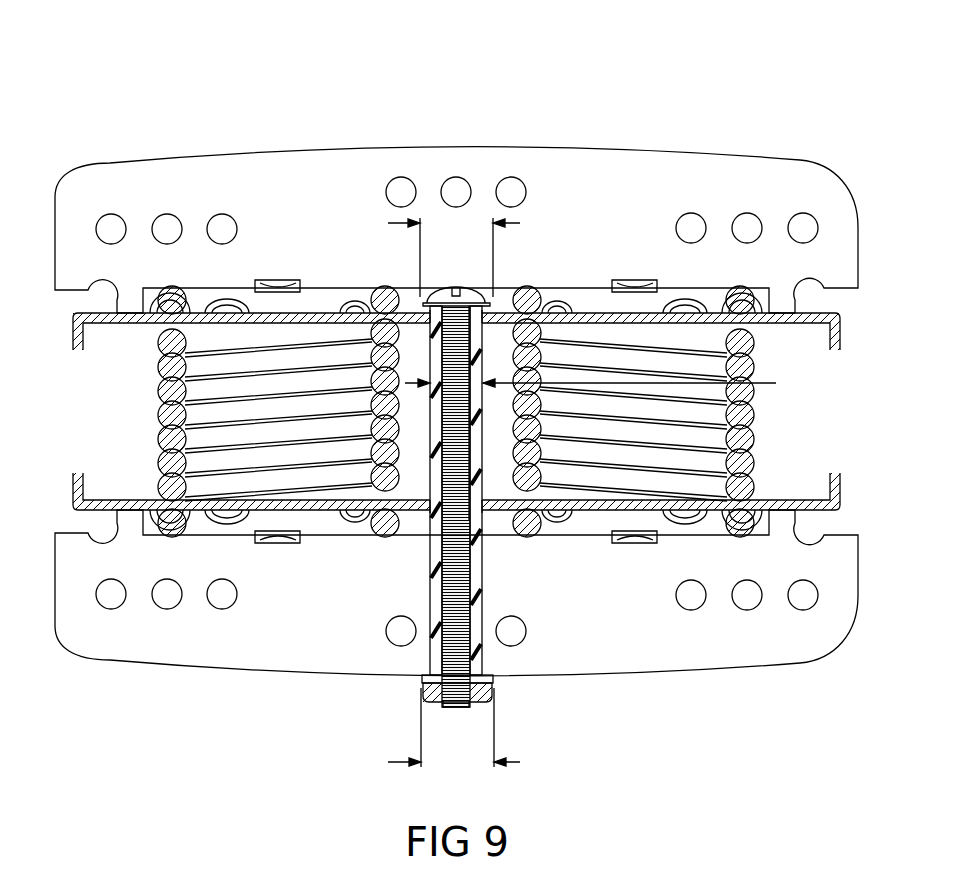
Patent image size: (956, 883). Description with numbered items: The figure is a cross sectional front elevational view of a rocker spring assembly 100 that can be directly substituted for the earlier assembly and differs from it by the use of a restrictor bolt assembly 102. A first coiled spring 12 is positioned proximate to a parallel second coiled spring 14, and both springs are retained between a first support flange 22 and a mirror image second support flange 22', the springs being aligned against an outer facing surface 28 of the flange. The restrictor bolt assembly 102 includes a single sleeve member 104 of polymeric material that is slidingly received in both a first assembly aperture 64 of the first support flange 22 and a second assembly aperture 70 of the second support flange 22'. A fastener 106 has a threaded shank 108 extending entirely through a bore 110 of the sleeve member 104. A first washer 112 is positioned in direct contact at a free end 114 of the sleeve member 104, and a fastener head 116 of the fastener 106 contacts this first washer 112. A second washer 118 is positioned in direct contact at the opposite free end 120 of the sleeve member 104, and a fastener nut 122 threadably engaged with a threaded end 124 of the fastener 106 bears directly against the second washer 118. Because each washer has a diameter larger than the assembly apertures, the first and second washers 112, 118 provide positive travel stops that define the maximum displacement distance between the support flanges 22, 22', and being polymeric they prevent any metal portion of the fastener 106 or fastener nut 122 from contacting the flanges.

The rocker spring assembly 100 is at (692, 72).
The outer facing surface 28 is at (126, 305).
The second assembly aperture 70 is at (483, 517).
The first support flange 22 is at (440, 350).
The second support flange 22' is at (439, 474).
The first coiled spring 12 is at (162, 440).
The second coiled spring 14 is at (750, 437).
The first assembly aperture 64 is at (347, 290).
The first washer 112 is at (400, 297).
The fastener 106 is at (450, 280).
The fastener head 116 is at (482, 297).
The free end 114 is at (485, 355).
The threaded shank 108 is at (478, 340).
The bore 110 is at (474, 478).
The restrictor bolt assembly 102 is at (420, 563).
The sleeve member 104 is at (433, 490).
The second washer 118 is at (422, 680).
The free end 120 is at (493, 688).
The fastener nut 122 is at (446, 706).
The threaded end 124 is at (458, 704).